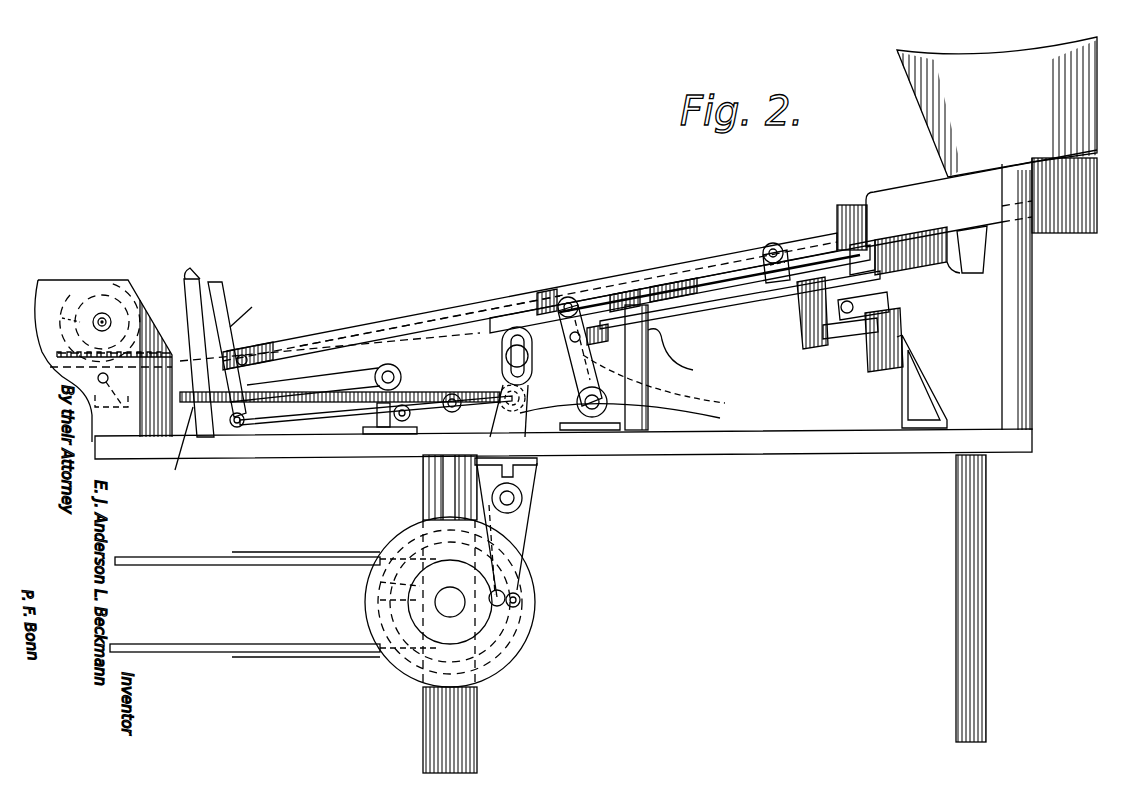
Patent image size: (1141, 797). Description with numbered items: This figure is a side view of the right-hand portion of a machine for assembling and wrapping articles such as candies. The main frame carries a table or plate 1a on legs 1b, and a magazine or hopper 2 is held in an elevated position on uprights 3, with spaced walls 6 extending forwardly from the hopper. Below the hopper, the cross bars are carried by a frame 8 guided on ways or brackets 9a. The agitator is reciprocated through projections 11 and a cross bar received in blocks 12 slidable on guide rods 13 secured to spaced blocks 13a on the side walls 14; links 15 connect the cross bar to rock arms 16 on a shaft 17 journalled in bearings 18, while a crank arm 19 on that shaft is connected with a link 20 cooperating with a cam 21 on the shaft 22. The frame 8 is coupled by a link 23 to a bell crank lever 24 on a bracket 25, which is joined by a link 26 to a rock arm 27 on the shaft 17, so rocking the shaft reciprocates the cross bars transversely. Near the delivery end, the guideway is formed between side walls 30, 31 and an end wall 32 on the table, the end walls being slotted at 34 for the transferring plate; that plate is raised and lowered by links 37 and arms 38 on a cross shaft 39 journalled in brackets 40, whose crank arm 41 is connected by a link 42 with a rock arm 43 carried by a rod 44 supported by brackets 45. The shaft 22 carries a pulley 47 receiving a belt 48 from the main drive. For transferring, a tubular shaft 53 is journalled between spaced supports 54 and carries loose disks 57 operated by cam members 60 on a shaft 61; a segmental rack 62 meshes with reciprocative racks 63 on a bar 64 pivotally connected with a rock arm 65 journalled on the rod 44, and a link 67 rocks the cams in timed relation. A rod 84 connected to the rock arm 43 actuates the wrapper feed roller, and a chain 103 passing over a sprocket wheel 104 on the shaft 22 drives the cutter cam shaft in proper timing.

The table or plate 1a is at (810, 462).
The legs 1b is at (956, 582).
The magazine or hopper 2 is at (997, 135).
The uprights 3 is at (1002, 330).
The spaced walls 6 is at (981, 198).
The frame 8 is at (922, 272).
The ways or brackets 9a is at (955, 288).
The projections 11 is at (800, 243).
The blocks 12 is at (780, 262).
The guide rods 13 is at (745, 290).
The spaced blocks 13a is at (862, 253).
The side walls 14 is at (565, 298).
The links 15 is at (585, 300).
The rock arms 16 is at (625, 419).
The shaft 17 is at (600, 415).
The bearings 18 is at (605, 425).
The crank arm 19 is at (572, 403).
The link 20 is at (453, 484).
The cam 21 is at (520, 620).
The shaft 22 is at (455, 607).
The link 23 is at (795, 340).
The bell crank lever 24 is at (853, 335).
The bracket 25 is at (925, 392).
The link 26 is at (708, 323).
The rock arm 27 is at (654, 384).
The side wall 30 is at (244, 310).
The side wall 31 is at (188, 265).
The end wall 32 is at (192, 325).
The vertical slots 34 is at (214, 282).
The links 37 is at (225, 425).
The arms 38 is at (300, 415).
The cross shaft 39 is at (401, 380).
The brackets 40 is at (377, 418).
The crank arm 41 is at (380, 433).
The link 42 is at (435, 415).
The rock arm 43 is at (520, 420).
The rod 44 is at (514, 510).
The brackets 45 is at (530, 490).
The pulley 47 is at (378, 601).
The belt 48 is at (310, 556).
The tubular shaft 53 is at (104, 310).
The spaced supports 54 is at (82, 282).
The loose collars or disks 57 is at (60, 310).
The cam members 60 is at (128, 310).
The shaft 61 is at (98, 378).
The segmental rack 62 is at (80, 345).
The reciprocative racks 63 is at (97, 368).
The bar 64 is at (460, 320).
The rock arm 65 is at (530, 356).
The link 67 is at (174, 453).
The rod 84 is at (290, 402).
The chain 103 is at (158, 558).
The sprocket wheel 104 is at (378, 582).